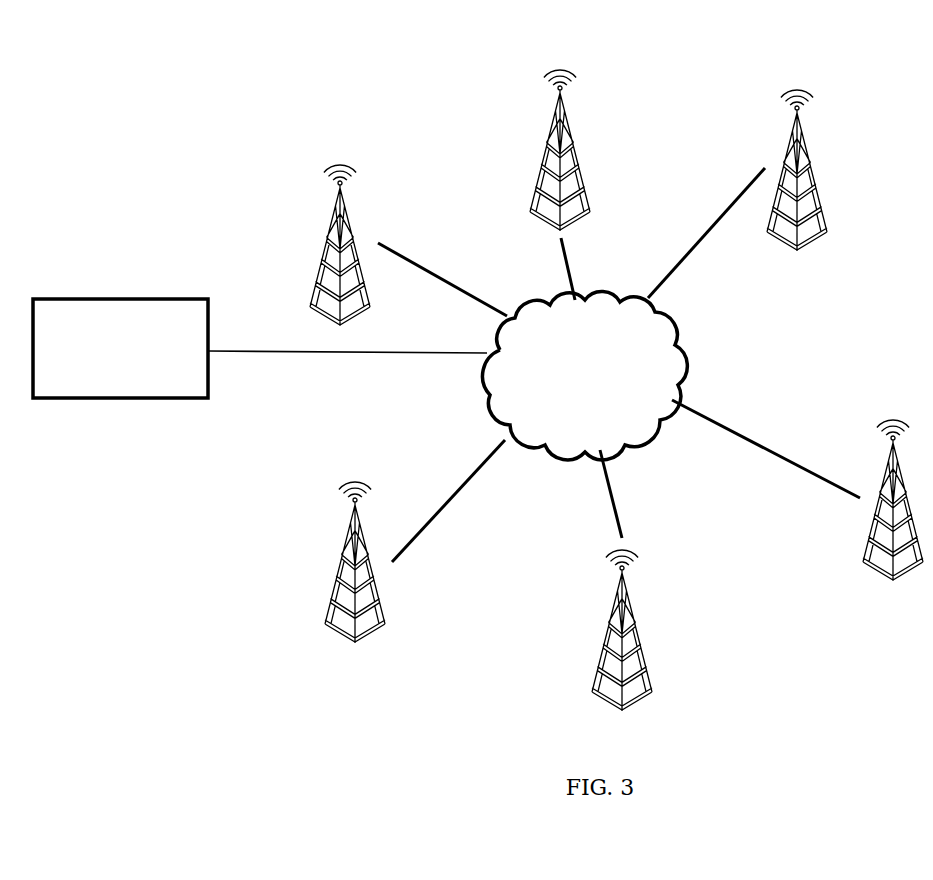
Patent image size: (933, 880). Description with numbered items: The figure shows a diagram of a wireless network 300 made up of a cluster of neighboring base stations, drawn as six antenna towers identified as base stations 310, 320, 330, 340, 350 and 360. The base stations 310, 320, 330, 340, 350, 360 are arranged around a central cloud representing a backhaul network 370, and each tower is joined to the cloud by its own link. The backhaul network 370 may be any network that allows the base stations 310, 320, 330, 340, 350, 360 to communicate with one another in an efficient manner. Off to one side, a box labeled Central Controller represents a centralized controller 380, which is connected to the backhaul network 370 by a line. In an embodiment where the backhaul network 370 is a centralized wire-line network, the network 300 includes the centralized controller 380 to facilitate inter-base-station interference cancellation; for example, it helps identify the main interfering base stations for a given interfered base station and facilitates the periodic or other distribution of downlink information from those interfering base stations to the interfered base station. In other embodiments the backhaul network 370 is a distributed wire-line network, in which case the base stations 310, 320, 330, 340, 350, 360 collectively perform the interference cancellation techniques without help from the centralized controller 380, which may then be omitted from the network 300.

The network 300 is at (92, 84).
The base station 310 is at (351, 466).
The base station 320 is at (336, 150).
The base station 330 is at (536, 58).
The base station 340 is at (773, 80).
The base station 350 is at (870, 410).
The base station 360 is at (657, 628).
The backhaul network 370 is at (567, 369).
The centralized controller 380 is at (136, 298).